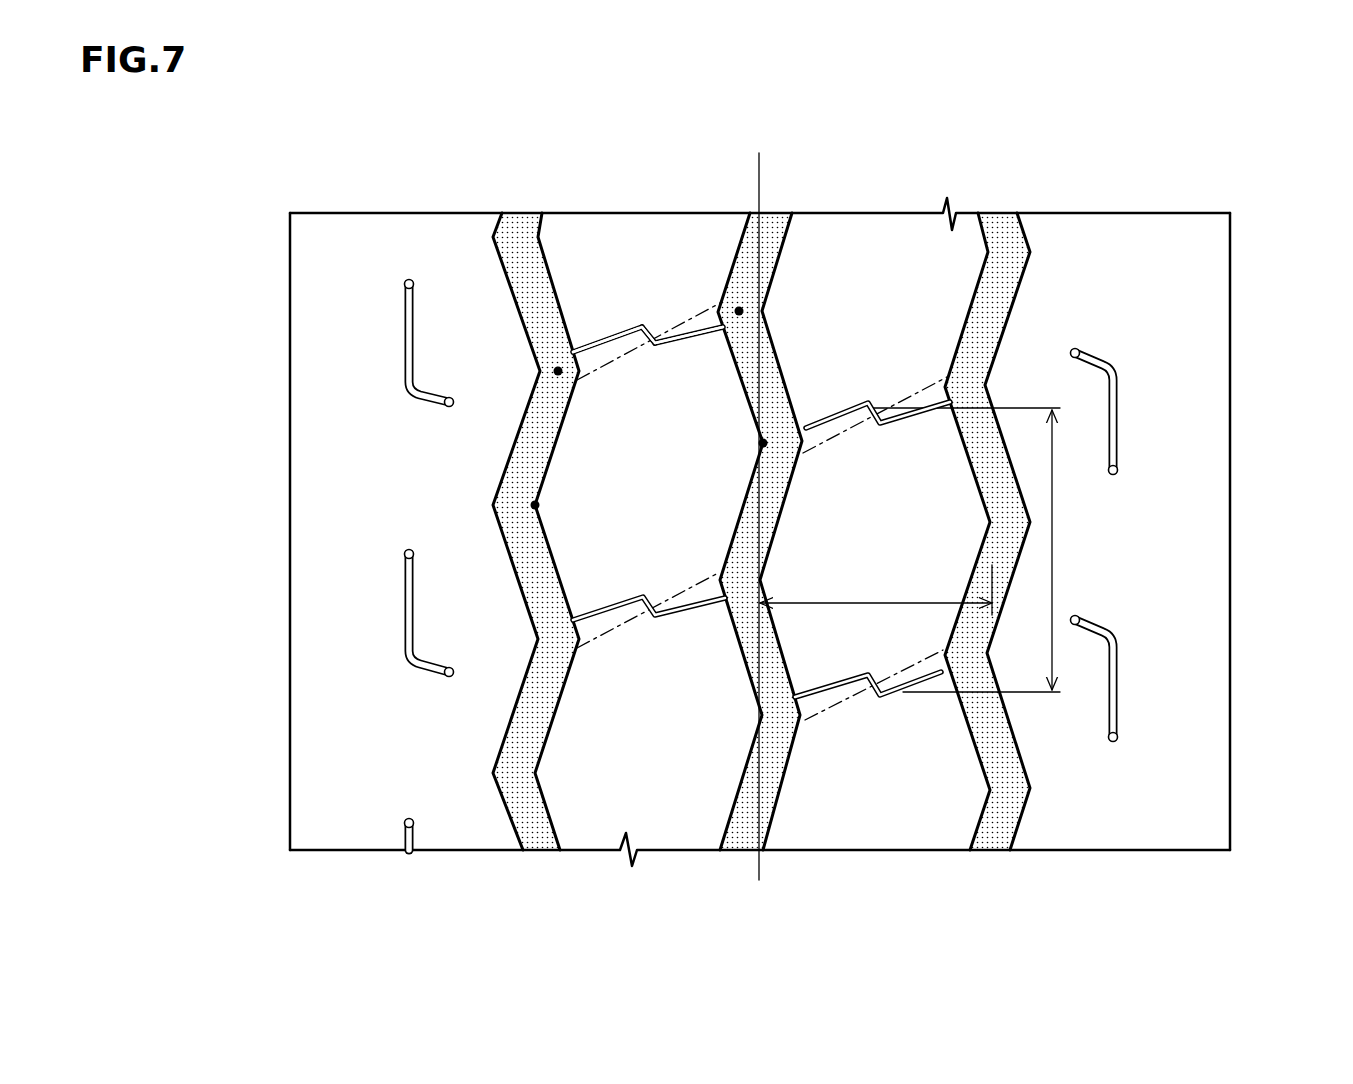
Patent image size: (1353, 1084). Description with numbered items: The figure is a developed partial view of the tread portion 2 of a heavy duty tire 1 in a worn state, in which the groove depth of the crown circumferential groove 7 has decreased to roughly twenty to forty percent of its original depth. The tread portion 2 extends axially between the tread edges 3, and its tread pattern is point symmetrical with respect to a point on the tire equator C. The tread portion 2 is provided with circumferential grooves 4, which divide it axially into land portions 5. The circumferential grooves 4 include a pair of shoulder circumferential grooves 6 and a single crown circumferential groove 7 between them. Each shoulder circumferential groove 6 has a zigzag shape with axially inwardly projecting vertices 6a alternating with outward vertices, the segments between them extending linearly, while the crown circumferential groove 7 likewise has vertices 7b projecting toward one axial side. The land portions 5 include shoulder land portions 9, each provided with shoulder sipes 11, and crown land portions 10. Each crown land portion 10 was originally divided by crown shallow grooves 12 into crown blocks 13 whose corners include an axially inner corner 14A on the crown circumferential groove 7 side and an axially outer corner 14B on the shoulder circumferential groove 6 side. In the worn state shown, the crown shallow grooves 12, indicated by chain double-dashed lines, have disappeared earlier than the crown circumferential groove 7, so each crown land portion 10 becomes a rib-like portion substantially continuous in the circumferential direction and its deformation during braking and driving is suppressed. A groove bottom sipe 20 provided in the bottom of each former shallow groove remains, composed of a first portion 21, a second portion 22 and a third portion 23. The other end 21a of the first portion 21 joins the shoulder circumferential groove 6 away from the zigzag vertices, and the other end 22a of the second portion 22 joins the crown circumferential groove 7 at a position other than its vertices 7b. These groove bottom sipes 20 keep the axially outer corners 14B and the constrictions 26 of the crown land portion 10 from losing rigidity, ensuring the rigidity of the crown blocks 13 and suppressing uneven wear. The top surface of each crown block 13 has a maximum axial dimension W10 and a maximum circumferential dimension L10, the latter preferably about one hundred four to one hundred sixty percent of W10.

The heavy duty tire 1 is at (762, 481).
The tread portion 2 is at (1118, 248).
The tread edges 3 is at (290, 243).
The circumferential grooves 4 is at (761, 589).
The land portions 5 is at (732, 170).
The shoulder circumferential grooves 6 is at (527, 810).
The axially inwardly projecting vertices 6a is at (558, 371).
The crown circumferential groove 7 is at (742, 563).
The vertices projecting toward the other side 7b is at (739, 311).
The shoulder land portions 9 is at (444, 253).
The crown land portions 10 is at (922, 193).
The shoulder sipes 11 is at (406, 315).
The crown shallow grooves 12 is at (653, 590).
The crown blocks 13 is at (863, 553).
The axially inner corner 14A is at (763, 443).
The axially outer corner 14B is at (535, 505).
The groove bottom sipe 20 is at (546, 505).
The first portion 21 is at (600, 337).
The other end of the first portion 21a is at (573, 352).
The second portion 22 is at (687, 333).
The other end of the second portion 22a is at (719, 237).
The third portion 23 is at (653, 337).
The constrictions 26 is at (952, 384).
The maximum dimension in the tire circumferential direction L10 is at (990, 550).
The maximum dimension in the tire axial direction W10 is at (876, 602).
The tire equator C is at (758, 502).